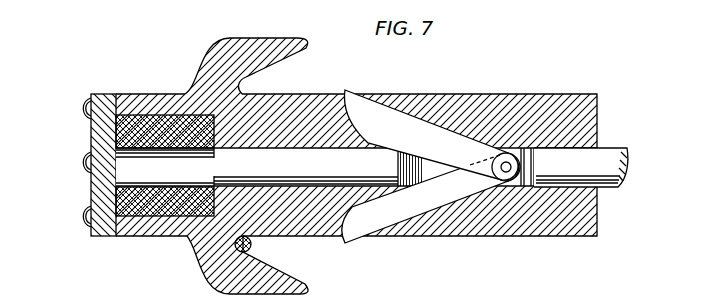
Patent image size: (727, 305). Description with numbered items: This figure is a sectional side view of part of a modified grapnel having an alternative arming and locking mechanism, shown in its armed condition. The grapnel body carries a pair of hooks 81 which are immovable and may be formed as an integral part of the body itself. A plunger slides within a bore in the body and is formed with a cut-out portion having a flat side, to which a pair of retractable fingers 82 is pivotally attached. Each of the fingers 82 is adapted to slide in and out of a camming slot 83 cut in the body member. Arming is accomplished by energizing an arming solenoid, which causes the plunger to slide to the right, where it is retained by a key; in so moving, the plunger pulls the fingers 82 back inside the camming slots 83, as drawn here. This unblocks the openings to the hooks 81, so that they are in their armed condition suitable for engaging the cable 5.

The cable 5 is at (252, 245).
The hooks 81 is at (272, 46).
The retractable fingers 82 is at (414, 162).
The camming slot 83 is at (338, 93).